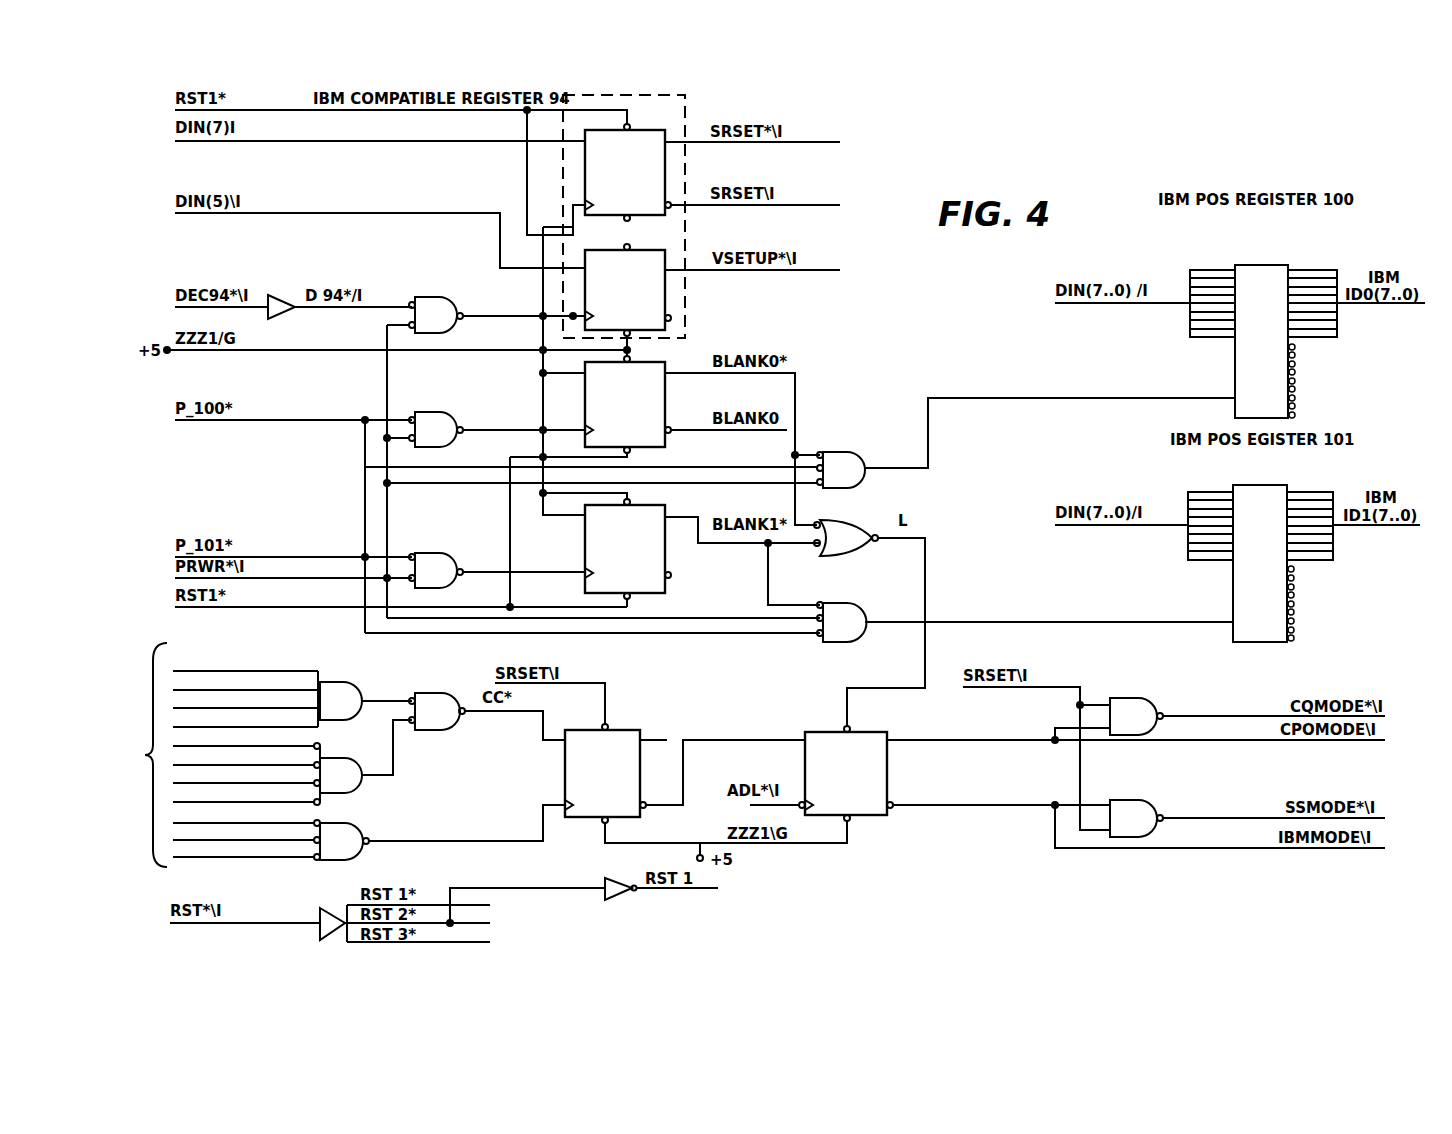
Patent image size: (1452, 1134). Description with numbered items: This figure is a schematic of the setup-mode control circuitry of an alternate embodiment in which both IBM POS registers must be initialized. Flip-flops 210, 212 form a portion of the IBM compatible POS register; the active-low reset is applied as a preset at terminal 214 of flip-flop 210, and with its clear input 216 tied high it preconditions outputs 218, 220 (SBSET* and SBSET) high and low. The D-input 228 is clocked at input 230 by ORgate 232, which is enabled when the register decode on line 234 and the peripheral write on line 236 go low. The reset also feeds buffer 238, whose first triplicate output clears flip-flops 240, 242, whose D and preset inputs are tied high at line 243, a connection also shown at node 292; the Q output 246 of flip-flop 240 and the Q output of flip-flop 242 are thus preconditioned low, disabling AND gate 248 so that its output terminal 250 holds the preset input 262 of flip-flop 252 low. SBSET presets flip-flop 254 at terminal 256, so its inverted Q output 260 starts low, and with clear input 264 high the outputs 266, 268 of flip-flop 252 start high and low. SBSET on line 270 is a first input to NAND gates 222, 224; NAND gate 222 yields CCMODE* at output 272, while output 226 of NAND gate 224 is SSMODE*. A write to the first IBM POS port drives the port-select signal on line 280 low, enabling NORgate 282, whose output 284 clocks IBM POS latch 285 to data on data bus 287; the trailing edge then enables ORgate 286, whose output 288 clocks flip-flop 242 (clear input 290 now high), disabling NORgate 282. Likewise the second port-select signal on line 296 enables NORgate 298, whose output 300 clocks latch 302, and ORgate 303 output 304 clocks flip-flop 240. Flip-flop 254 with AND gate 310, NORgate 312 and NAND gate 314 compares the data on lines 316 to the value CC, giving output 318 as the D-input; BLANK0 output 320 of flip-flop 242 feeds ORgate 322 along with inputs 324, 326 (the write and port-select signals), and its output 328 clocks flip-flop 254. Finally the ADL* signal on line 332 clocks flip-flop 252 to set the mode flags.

The flip-flop 210 is at (667, 132).
The flip-flop 212 is at (667, 262).
The preset terminal 214 is at (629, 124).
The reset or clear input 216 is at (629, 222).
The output 218 is at (812, 142).
The output terminal 220 is at (802, 205).
The NAND gate 222 is at (1152, 697).
The NAND gate 224 is at (1159, 799).
The output 226 is at (1167, 823).
The D-input 228 is at (510, 140).
The clock input 230 is at (583, 204).
The ORgate 232 is at (445, 297).
The line 234 is at (262, 290).
The line 236 is at (160, 570).
The buffer 238 is at (330, 942).
The flip-flop 240 is at (640, 505).
The flip-flop 242 is at (667, 393).
The line 243 is at (285, 350).
The Q output 246 is at (698, 517).
The AND gate 248 is at (848, 521).
The output terminal 250 is at (925, 538).
The flip-flop 252 is at (862, 731).
The flip-flop 254 is at (642, 730).
The preset terminal 256 is at (607, 683).
The inverted Q output 260 is at (683, 776).
The preset input 262 is at (860, 688).
The clear input 264 is at (848, 832).
The output 266 is at (968, 740).
The output 268 is at (978, 806).
The line 270 is at (1052, 685).
The output 272 is at (1235, 715).
The line 280 is at (265, 421).
The NORgate 282 is at (850, 452).
The output 284 is at (930, 398).
The IBM POS latch 285 is at (1258, 265).
The ORgate 286 is at (428, 412).
The data bus 287 is at (1062, 305).
The output 288 is at (478, 430).
The clear input 290 is at (629, 453).
The reset/set connection 292 is at (636, 345).
The line 296 is at (283, 557).
The NORgate 298 is at (861, 605).
The output 300 is at (1065, 622).
The IBM POS 101 latch 302 is at (1265, 485).
The ORgate 303 is at (428, 553).
The output 304 is at (470, 574).
The AND gate 310 is at (345, 682).
The NORgate 312 is at (345, 758).
The NAND gate 314 is at (445, 732).
The lines 316 is at (151, 773).
The output 318 is at (470, 707).
The output 320 is at (718, 431).
The ORgate 322 is at (348, 823).
The input 324 is at (261, 824).
The input 326 is at (306, 861).
The output 328 is at (443, 841).
The line 332 is at (729, 811).